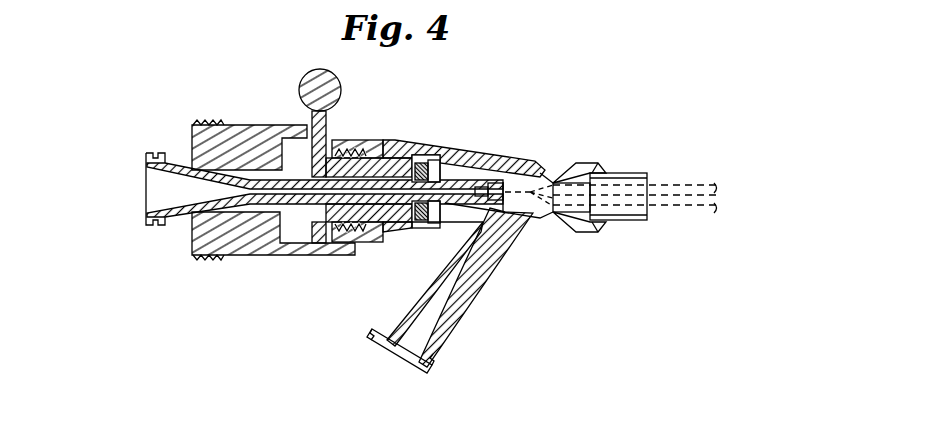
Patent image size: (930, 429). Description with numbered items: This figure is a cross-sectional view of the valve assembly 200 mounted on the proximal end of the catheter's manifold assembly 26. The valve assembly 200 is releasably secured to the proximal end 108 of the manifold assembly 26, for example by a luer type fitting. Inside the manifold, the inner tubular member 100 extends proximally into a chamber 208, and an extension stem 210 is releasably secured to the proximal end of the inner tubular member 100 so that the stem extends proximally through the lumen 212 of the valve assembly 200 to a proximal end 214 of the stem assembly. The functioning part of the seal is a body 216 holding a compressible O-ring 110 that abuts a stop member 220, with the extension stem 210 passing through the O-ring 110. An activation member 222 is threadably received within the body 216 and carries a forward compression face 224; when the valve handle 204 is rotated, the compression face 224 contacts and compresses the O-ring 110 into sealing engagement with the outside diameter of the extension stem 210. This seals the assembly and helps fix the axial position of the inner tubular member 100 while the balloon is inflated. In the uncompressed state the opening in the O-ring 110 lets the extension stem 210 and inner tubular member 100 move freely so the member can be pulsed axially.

The manifold assembly 26 is at (498, 160).
The inner tubular member 100 is at (536, 228).
The proximal end of the manifold 108 is at (418, 137).
The O-ring 110 is at (432, 166).
The valve assembly 200 is at (267, 268).
The valve handle 204 is at (306, 86).
The chamber 208 is at (546, 172).
The extension stem 210 is at (256, 176).
The lumen 212 is at (190, 225).
The proximal end 214 is at (145, 226).
The body 216 is at (376, 143).
The stop member 220 is at (426, 230).
The activation member 222 is at (352, 215).
The forward compression face 224 is at (416, 160).